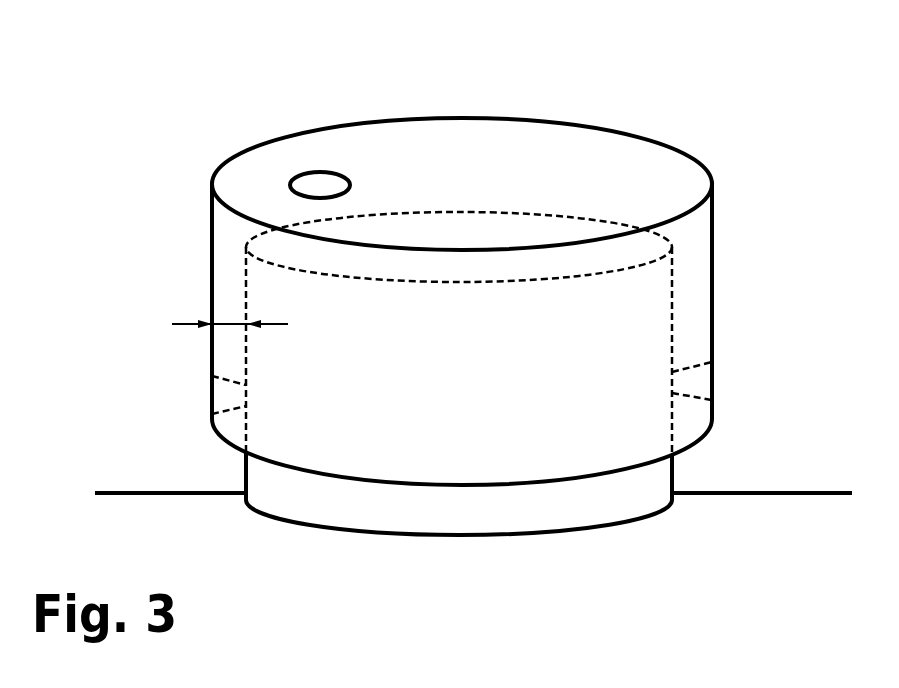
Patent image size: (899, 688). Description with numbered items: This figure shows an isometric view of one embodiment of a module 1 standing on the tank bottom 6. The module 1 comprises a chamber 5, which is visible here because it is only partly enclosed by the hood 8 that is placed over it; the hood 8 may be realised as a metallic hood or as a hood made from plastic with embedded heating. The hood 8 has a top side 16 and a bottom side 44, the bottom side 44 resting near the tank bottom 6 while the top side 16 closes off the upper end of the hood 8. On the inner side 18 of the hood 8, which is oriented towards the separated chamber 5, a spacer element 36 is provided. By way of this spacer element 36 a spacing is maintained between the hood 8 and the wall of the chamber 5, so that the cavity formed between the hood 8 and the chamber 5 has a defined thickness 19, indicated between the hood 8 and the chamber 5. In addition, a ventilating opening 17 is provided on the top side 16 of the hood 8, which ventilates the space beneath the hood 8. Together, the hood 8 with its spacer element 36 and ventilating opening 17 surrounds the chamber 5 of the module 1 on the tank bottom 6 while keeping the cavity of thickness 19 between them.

The module 1 is at (140, 156).
The chamber 5 is at (673, 474).
The tank bottom 6 is at (747, 494).
The hood 8 is at (463, 374).
The top side 16 is at (584, 157).
The ventilating opening 17 is at (305, 172).
The inner side 18 is at (233, 350).
The thickness 19 is at (192, 323).
The spacer element 36 is at (228, 408).
The bottom side 44 is at (214, 464).